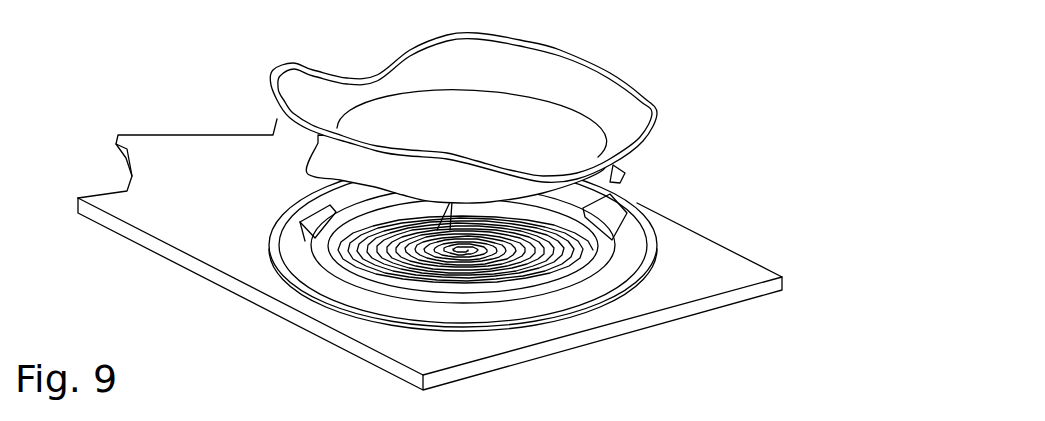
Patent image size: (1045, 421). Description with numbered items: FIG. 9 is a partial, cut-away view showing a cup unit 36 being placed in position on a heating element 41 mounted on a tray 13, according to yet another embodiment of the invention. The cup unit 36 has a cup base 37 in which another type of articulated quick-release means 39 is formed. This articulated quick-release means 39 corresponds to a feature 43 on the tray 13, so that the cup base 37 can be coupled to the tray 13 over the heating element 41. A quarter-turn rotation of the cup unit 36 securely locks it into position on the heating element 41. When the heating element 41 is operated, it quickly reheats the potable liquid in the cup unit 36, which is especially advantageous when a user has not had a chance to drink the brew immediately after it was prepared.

The tray 13 is at (180, 282).
The cup unit 36 is at (628, 70).
The cup base 37 is at (555, 208).
The articulated quick-release means 39 is at (627, 171).
The heating element 41 is at (370, 273).
The feature 43 is at (633, 210).